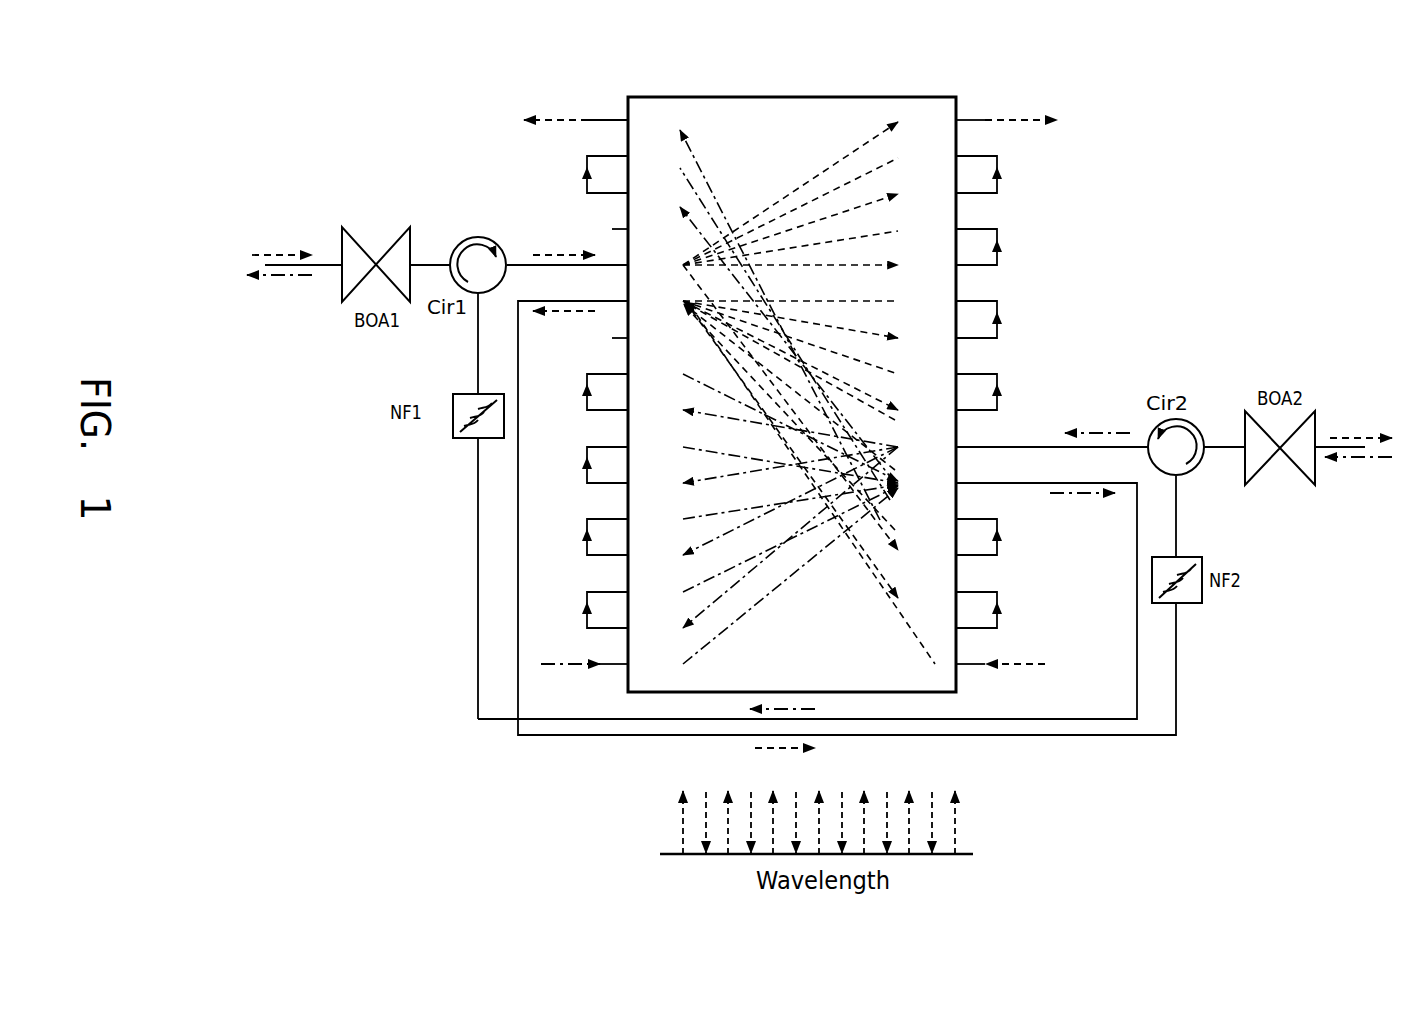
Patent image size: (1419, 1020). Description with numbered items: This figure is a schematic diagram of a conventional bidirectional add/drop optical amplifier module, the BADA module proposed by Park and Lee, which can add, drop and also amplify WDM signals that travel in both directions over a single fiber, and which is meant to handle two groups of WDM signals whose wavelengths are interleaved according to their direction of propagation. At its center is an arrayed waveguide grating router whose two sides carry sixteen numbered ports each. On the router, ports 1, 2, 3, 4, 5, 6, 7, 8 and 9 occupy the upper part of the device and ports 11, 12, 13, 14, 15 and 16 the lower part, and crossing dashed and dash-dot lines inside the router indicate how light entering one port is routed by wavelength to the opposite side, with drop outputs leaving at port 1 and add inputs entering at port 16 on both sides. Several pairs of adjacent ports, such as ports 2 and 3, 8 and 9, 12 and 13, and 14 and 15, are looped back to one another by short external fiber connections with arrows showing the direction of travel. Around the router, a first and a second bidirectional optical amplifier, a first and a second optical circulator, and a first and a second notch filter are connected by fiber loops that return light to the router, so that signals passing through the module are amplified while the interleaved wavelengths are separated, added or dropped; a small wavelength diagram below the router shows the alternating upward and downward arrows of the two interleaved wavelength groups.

The port 1 (drop) 1 is at (790, 117).
The port 2 is at (792, 168).
The port 3 is at (792, 193).
The port 4 is at (807, 241).
The port 5 is at (752, 265).
The port 6 is at (847, 518).
The port 7 is at (804, 338).
The port 8 is at (792, 386).
The port 9 is at (792, 410).
The port 11 is at (807, 595).
The mid-stage device 12 is at (792, 531).
The port 13 is at (792, 555).
The port 14 is at (792, 604).
The port 15 is at (792, 628).
The port 16 (add) 16 is at (811, 656).